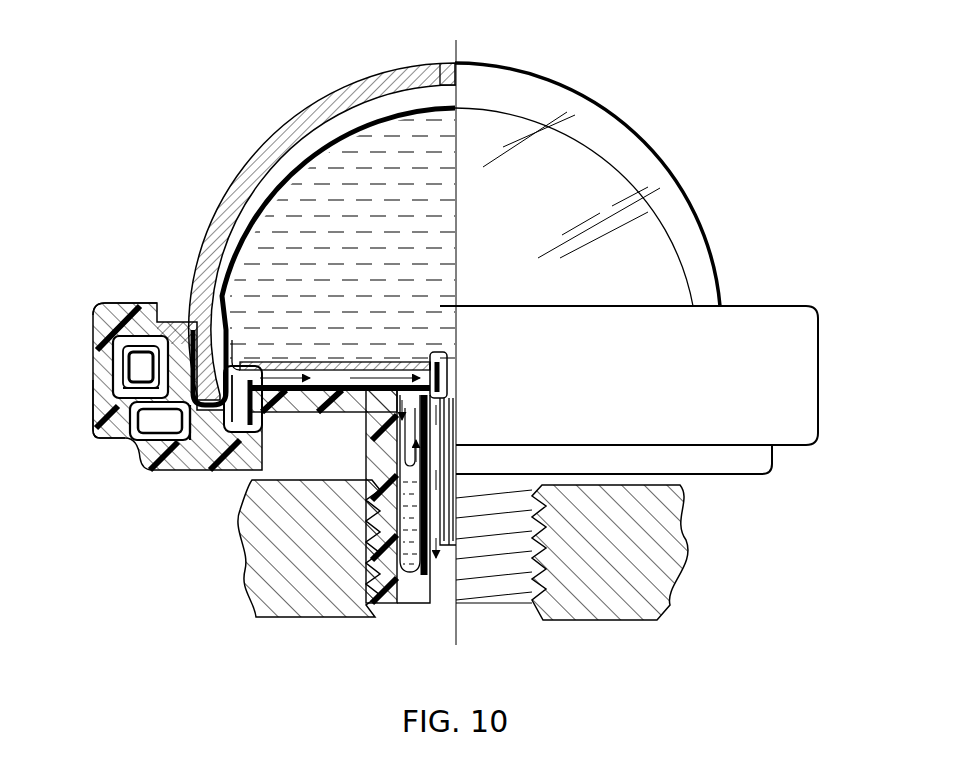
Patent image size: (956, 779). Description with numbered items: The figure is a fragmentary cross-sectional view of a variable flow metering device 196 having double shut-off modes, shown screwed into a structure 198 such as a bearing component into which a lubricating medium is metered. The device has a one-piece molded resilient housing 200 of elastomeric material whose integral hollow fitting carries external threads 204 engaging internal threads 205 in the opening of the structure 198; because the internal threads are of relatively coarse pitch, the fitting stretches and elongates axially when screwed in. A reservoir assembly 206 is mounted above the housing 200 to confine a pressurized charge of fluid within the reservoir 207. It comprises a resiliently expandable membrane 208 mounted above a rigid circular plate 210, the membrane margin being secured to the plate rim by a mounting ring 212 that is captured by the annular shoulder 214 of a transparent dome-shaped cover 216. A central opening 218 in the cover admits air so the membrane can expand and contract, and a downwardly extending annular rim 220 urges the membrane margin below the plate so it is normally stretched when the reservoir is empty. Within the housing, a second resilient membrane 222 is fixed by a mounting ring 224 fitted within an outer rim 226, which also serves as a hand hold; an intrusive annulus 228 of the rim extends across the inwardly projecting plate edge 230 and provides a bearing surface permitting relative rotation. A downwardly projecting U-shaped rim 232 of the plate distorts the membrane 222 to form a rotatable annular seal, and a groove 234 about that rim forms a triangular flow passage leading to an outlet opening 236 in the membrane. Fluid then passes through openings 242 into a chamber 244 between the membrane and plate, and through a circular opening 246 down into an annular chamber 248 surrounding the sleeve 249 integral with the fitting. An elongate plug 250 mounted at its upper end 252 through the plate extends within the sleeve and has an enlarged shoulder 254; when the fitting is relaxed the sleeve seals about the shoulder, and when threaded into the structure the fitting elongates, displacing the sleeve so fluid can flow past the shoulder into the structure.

The variable flow metering device 196 is at (824, 303).
The structure 198 is at (682, 536).
The housing 200 is at (136, 452).
The external threads 204 is at (370, 467).
The internal threads 205 is at (540, 612).
The reservoir assembly 206 is at (582, 90).
The reservoir 207 is at (388, 236).
The membrane 208 is at (314, 150).
The plate 210 is at (428, 360).
The mounting ring 212 is at (148, 352).
The annular shoulder 214 is at (198, 318).
The cover 216 is at (358, 80).
The central opening 218 is at (440, 62).
The annular rim 220 is at (230, 362).
The membrane 222 is at (238, 372).
The mounting ring 224 is at (93, 430).
The outer rim 226 is at (93, 400).
The intrusive annulus 228 is at (96, 303).
The plate edge 230 is at (148, 348).
The U-shaped rim 232 is at (258, 378).
The groove 234 is at (182, 442).
The outlet opening 236 is at (203, 445).
The openings 242 is at (265, 392).
The chamber 244 is at (322, 380).
The circular opening 246 is at (446, 384).
The annular chamber 248 is at (408, 514).
The sleeve 249 is at (408, 548).
The plug 250 is at (452, 440).
The upper end 252 is at (442, 356).
The shoulder 254 is at (448, 392).